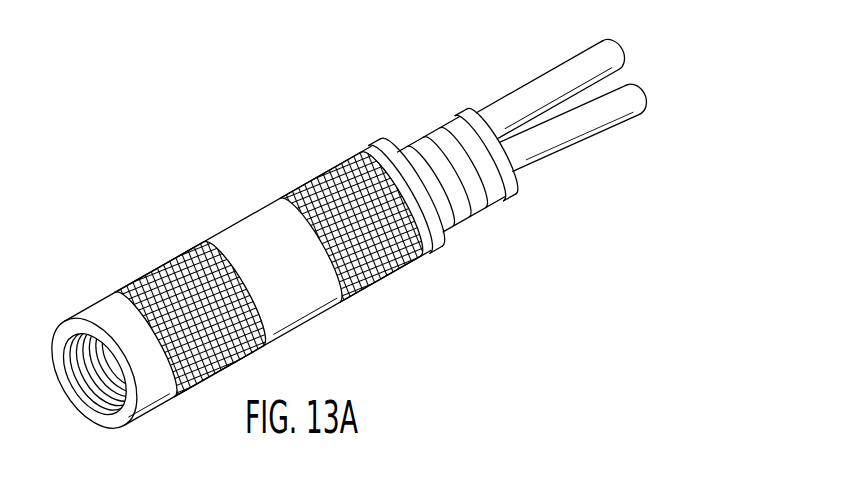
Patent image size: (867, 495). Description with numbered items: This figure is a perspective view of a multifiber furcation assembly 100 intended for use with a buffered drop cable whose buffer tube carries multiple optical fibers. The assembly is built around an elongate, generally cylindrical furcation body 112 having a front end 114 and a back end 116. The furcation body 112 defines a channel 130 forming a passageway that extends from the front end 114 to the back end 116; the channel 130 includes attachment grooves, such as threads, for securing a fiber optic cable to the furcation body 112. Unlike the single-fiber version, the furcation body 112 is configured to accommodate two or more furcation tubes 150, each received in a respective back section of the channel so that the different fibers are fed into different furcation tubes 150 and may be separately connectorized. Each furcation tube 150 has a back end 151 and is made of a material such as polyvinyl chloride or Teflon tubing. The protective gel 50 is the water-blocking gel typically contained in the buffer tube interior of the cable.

The multifiber furcation assembly 100 is at (192, 165).
The furcation body 112 is at (302, 293).
The front end 114 is at (60, 333).
The back end 116 is at (423, 137).
The channel 130 is at (107, 387).
The protective gel 50 is at (567, 78).
The furcation tube 150 is at (607, 110).
The back end 151 is at (627, 44).